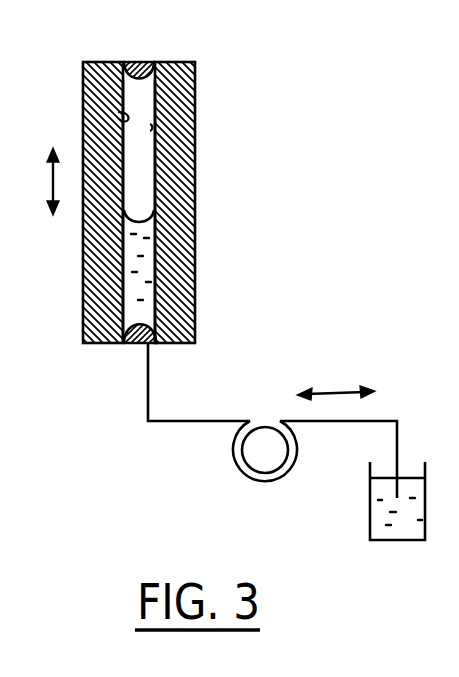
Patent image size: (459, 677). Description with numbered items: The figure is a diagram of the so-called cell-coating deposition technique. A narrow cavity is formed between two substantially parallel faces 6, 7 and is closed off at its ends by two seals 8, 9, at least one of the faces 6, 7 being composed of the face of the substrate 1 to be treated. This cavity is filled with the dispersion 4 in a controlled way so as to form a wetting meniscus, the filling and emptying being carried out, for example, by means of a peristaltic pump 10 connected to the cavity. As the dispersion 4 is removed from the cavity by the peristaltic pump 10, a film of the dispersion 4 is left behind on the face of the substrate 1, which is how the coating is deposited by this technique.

The substrate 1 is at (194, 86).
The dispersion 4 is at (148, 270).
The face 6 is at (196, 122).
The face 7 is at (118, 118).
The seal 8 is at (140, 61).
The seal 9 is at (158, 344).
The peristaltic pump 10 is at (290, 470).